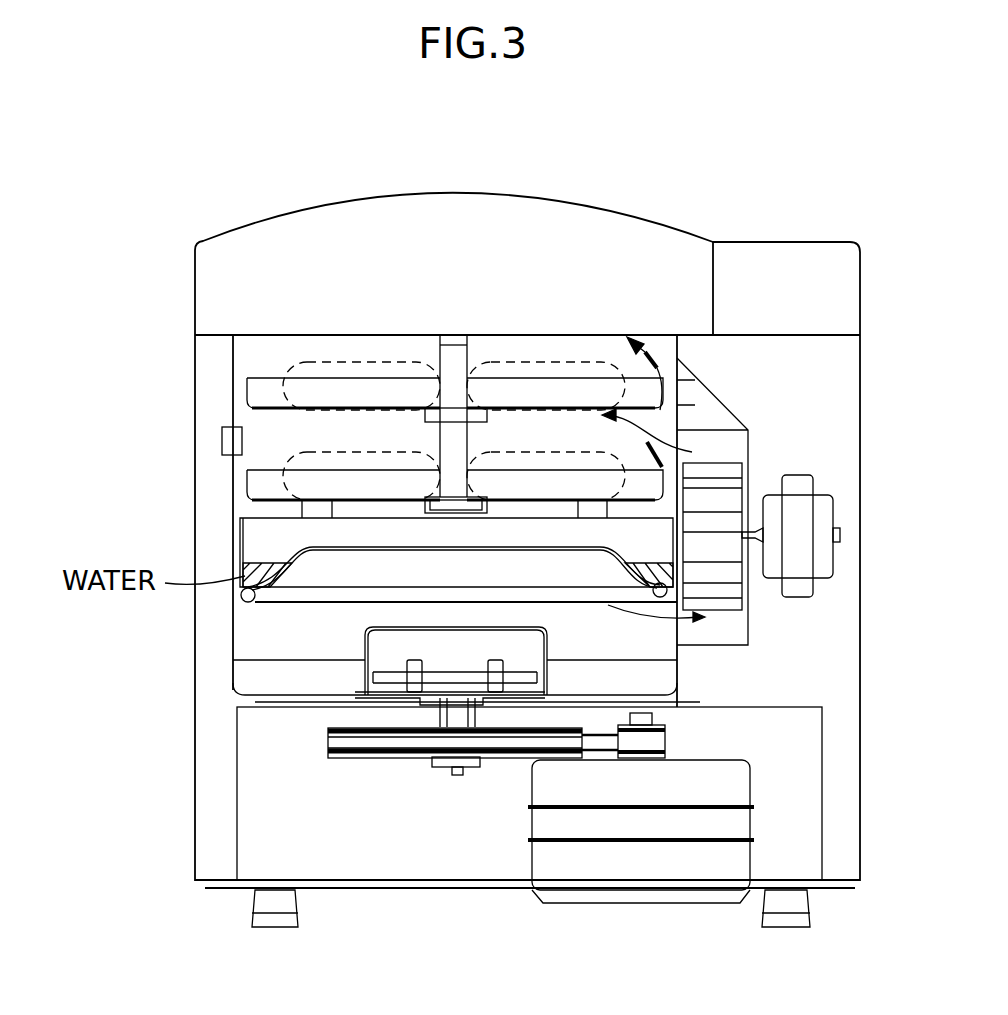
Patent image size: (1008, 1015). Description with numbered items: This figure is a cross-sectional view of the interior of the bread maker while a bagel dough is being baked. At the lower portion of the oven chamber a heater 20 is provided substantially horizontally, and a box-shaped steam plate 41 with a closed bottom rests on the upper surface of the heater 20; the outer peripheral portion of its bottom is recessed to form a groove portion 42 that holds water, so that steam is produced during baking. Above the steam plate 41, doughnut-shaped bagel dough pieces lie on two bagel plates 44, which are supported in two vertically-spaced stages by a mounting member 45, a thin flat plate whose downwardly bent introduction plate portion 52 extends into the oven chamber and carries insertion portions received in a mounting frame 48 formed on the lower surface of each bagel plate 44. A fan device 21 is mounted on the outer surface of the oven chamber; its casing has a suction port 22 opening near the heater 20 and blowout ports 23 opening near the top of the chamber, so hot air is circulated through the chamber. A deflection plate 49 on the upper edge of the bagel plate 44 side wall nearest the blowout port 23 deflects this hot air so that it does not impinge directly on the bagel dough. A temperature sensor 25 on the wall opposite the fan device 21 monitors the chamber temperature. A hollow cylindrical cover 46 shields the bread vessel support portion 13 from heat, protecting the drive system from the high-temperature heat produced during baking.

The bread vessel support portion 13 is at (240, 693).
The heater 20 is at (248, 598).
The fan device 21 is at (800, 510).
The suction port 22 is at (683, 627).
The blowout ports 23 is at (693, 405).
The temperature sensor 25 is at (222, 440).
The steam plate 41 is at (240, 528).
The groove portion 42 is at (245, 553).
The bagel plates 44 is at (285, 360).
The mounting member 45 is at (465, 333).
The cylindrical cover 46 is at (365, 655).
The mounting frame 48 is at (450, 510).
The deflection plate 49 is at (677, 395).
The introduction plate portion 52 is at (453, 350).